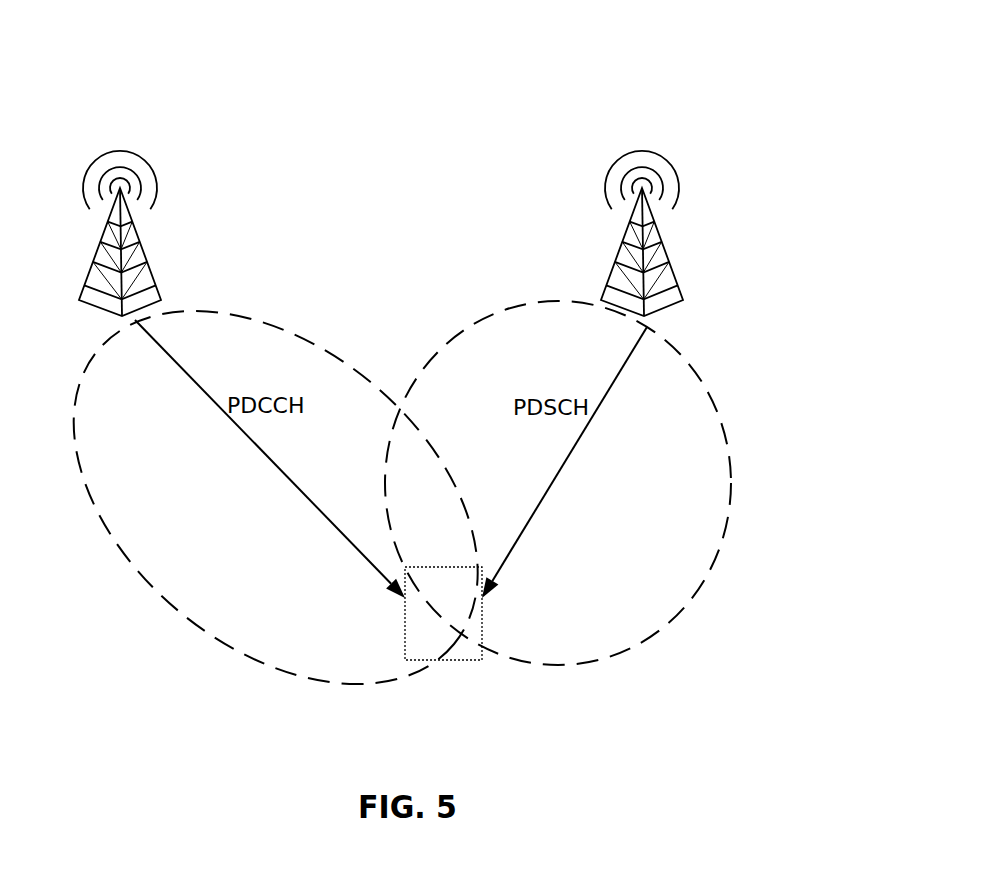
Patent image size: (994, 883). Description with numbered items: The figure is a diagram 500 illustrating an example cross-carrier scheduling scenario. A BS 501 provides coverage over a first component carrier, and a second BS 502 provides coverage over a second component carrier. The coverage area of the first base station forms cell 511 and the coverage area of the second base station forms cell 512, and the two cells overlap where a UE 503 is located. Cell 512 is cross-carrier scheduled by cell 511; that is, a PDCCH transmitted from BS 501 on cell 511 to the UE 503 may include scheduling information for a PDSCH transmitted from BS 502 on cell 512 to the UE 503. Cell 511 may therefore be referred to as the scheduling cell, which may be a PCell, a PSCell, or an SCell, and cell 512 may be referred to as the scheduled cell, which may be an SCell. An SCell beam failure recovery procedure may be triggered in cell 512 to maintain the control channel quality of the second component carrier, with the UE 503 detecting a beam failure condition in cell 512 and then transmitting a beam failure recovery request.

The diagram 500 is at (805, 85).
The BS 501 is at (155, 260).
The BS 502 is at (675, 260).
The UE 503 is at (443, 660).
The cell 511 is at (236, 318).
The cell 512 is at (705, 395).